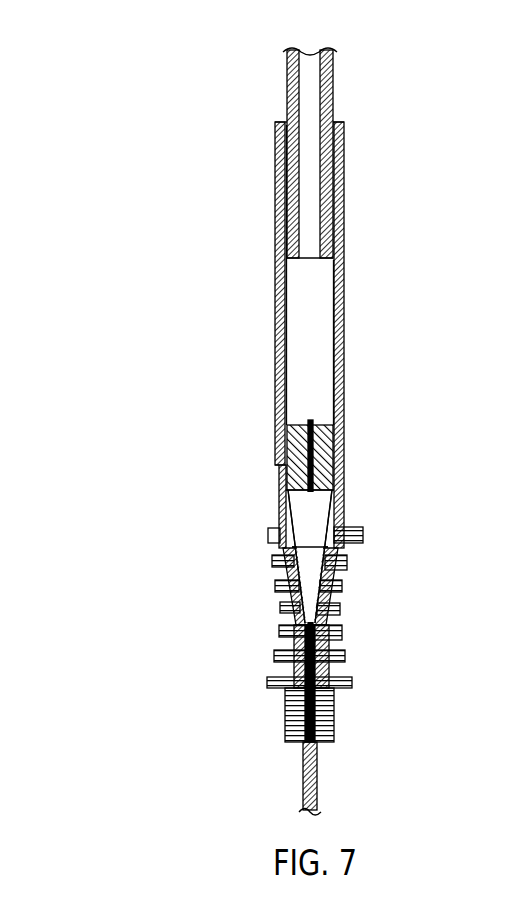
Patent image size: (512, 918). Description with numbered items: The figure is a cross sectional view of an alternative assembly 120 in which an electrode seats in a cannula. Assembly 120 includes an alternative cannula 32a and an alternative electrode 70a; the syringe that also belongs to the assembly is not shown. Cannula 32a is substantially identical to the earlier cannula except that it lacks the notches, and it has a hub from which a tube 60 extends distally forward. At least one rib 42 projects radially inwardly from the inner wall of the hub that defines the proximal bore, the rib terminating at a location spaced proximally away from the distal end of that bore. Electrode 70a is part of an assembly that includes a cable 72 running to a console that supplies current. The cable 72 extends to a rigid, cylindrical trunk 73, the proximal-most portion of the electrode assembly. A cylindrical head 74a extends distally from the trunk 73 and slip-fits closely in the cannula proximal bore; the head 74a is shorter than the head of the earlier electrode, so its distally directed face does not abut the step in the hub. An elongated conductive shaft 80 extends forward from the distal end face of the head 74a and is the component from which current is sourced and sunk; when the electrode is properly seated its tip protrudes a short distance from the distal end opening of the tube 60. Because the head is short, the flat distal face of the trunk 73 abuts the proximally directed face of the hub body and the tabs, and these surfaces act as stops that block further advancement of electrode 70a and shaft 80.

The alternative assembly 120 is at (168, 295).
The cable 72 is at (333, 68).
The alternative electrode 70a is at (385, 235).
The trunk 73 is at (275, 350).
The head 74a is at (340, 468).
The rib 42 is at (279, 472).
The alternative cannula 32a is at (277, 514).
The conductive shaft 80 is at (314, 563).
The tube 60 is at (302, 772).